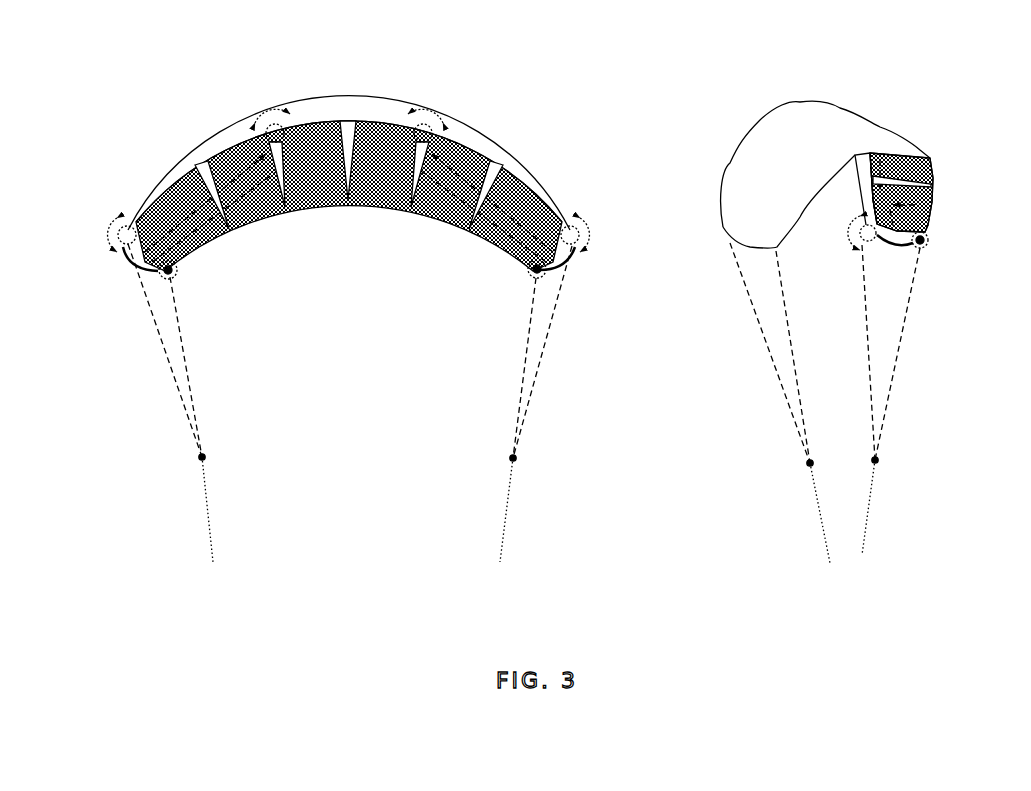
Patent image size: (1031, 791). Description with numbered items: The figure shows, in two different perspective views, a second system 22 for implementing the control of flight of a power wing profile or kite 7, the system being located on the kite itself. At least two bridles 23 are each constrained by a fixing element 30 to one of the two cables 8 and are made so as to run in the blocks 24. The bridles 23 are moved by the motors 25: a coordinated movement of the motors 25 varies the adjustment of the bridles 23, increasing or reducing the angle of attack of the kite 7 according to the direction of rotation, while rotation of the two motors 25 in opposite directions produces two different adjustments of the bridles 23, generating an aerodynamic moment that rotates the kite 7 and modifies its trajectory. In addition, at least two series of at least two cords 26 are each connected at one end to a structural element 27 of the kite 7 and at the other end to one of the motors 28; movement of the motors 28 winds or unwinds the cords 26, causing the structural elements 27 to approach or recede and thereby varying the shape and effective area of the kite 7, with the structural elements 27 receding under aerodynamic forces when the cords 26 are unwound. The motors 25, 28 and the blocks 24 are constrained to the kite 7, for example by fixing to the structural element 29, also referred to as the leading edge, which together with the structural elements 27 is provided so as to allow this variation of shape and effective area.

The kite 7 is at (379, 96).
The cables 8 is at (213, 530).
The second system for implementing the control of flight 22 is at (532, 105).
The bridles 23 is at (194, 385).
The blocks 24 is at (174, 274).
The motors 25 is at (125, 217).
The cords 26 is at (240, 182).
The structural element 27 is at (197, 156).
The motors 28 is at (288, 120).
The structural element 29 is at (344, 106).
The fixing element 30 is at (206, 457).